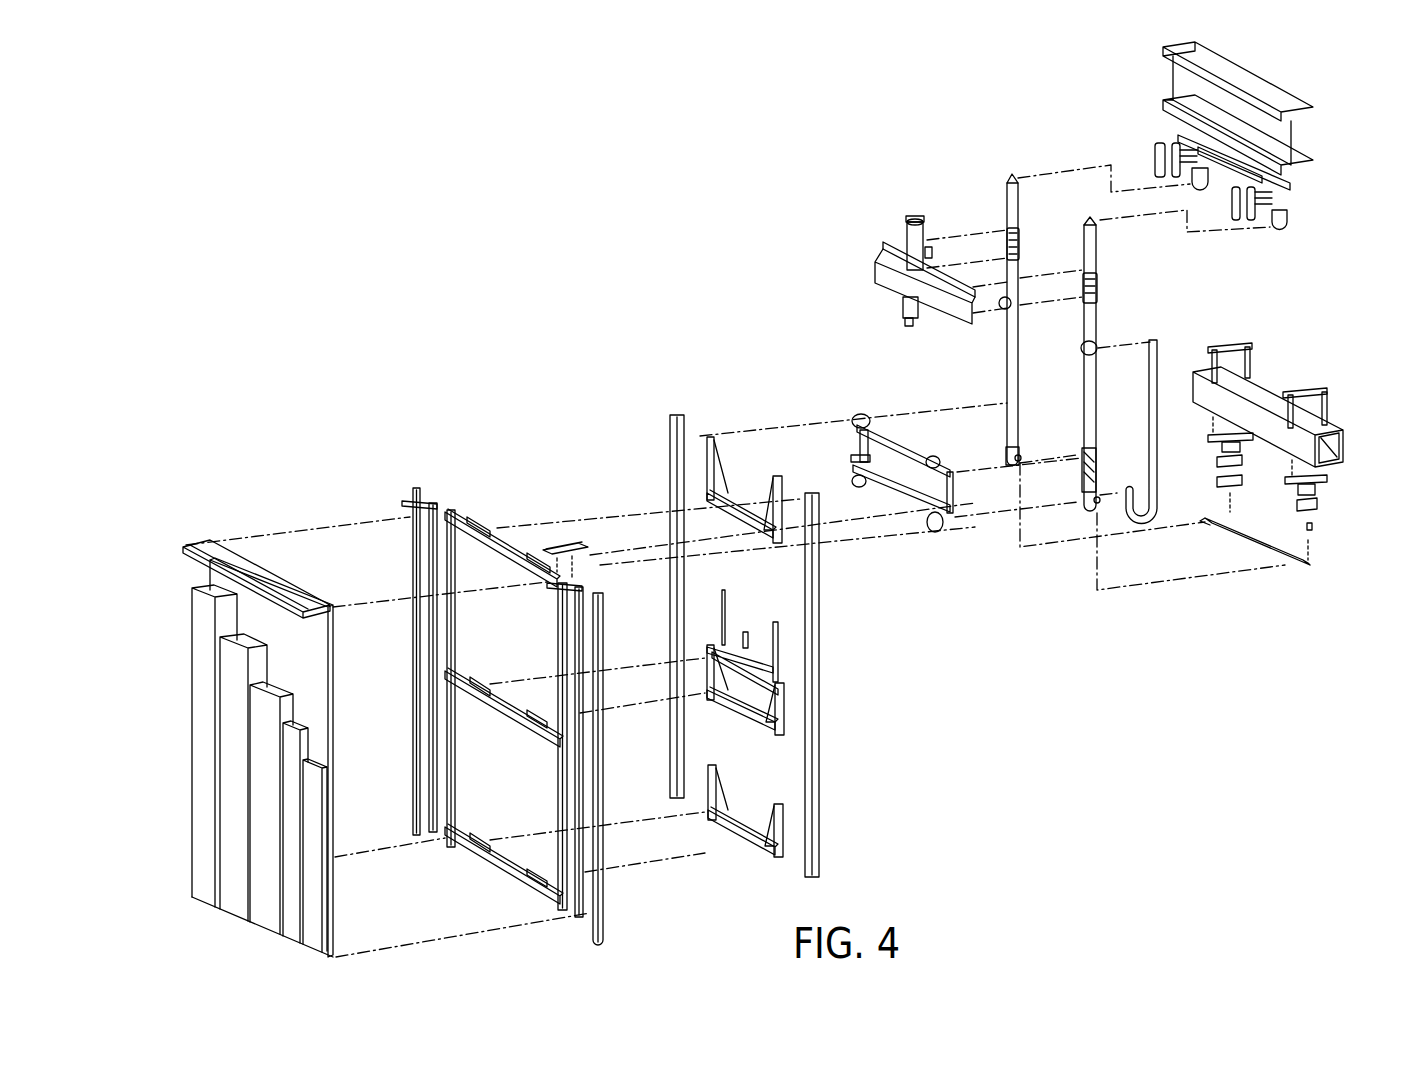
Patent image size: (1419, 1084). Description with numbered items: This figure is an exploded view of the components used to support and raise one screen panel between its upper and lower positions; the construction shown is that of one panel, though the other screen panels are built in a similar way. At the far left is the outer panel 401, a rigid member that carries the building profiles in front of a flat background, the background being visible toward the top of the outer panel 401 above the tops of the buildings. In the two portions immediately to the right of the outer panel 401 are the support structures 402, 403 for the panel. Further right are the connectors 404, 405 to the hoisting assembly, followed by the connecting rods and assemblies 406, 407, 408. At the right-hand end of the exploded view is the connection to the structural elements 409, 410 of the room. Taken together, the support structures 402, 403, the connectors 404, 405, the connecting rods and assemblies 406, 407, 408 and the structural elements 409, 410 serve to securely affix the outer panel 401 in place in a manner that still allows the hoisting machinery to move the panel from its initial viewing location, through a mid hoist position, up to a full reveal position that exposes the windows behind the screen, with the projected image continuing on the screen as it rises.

The outer panel 401 is at (181, 910).
The support structure 402 is at (606, 583).
The support structure 403 is at (838, 540).
The connector 404 is at (843, 470).
The connector 405 is at (876, 299).
The connecting rod 406 is at (1007, 208).
The connecting rod 407 is at (1097, 260).
The connecting assembly 408 is at (1162, 372).
The structural element 409 is at (1335, 385).
The structural element 410 is at (1303, 75).